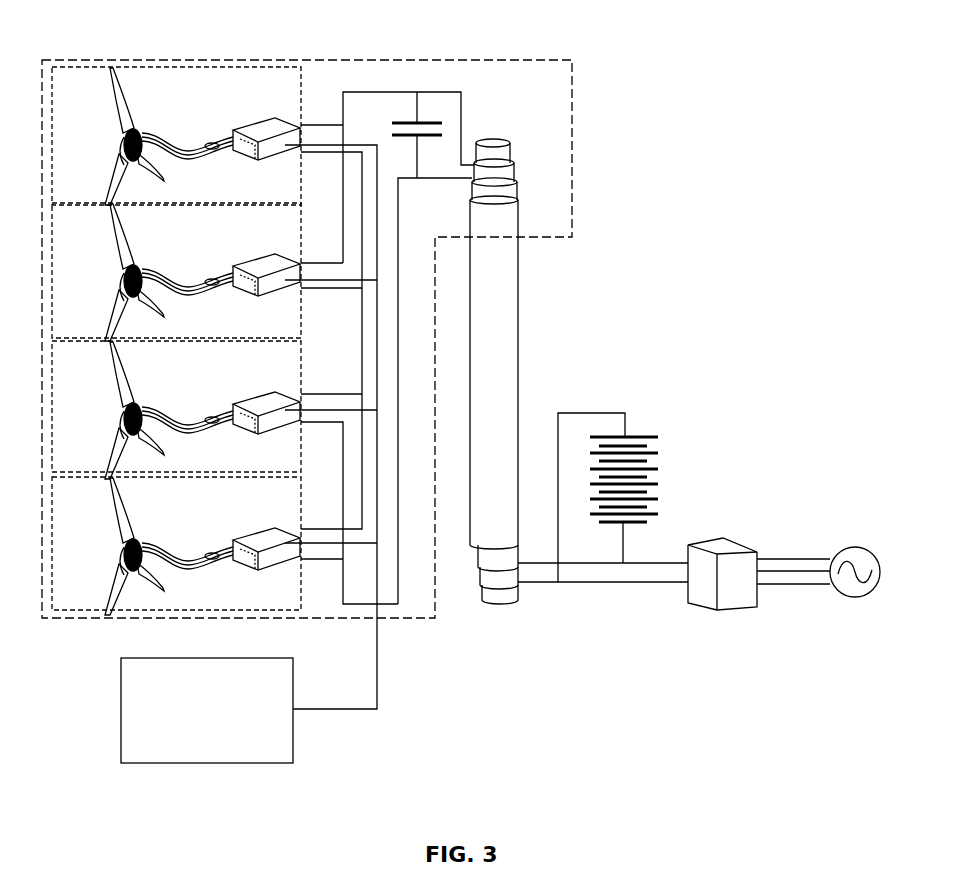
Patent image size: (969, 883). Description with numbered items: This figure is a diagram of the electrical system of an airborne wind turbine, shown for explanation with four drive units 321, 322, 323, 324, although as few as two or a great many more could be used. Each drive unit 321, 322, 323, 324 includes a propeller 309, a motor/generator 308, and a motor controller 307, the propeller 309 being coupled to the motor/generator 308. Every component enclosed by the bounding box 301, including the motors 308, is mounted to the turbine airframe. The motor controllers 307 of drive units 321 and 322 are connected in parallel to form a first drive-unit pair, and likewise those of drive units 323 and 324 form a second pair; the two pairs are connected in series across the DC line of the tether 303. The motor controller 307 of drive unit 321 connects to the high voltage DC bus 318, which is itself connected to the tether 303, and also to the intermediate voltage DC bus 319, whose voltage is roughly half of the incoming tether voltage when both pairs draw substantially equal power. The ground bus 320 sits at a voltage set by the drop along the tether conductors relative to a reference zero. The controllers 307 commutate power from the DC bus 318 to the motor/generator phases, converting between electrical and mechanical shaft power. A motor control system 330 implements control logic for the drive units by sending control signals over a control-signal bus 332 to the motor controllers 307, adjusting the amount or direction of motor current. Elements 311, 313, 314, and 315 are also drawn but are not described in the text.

The bounding box 301 is at (574, 142).
The tether 303 is at (518, 344).
The motor controller 307 is at (266, 365).
The motor/generator 308 is at (176, 371).
The propeller 309 is at (143, 341).
The capacitor 311 is at (430, 117).
The transformer 313 is at (730, 548).
The inductor 314 is at (640, 432).
The AC power source 315 is at (852, 548).
The high voltage DC bus 318 is at (357, 88).
The intermediate voltage DC bus 319 is at (350, 290).
The ground bus 320 is at (404, 248).
The drive unit 321 is at (176, 136).
The drive unit 322 is at (176, 270).
The drive unit 323 is at (176, 406).
The drive unit 324 is at (176, 543).
The motor control system 330 is at (121, 663).
The control-signal bus 332 is at (377, 648).